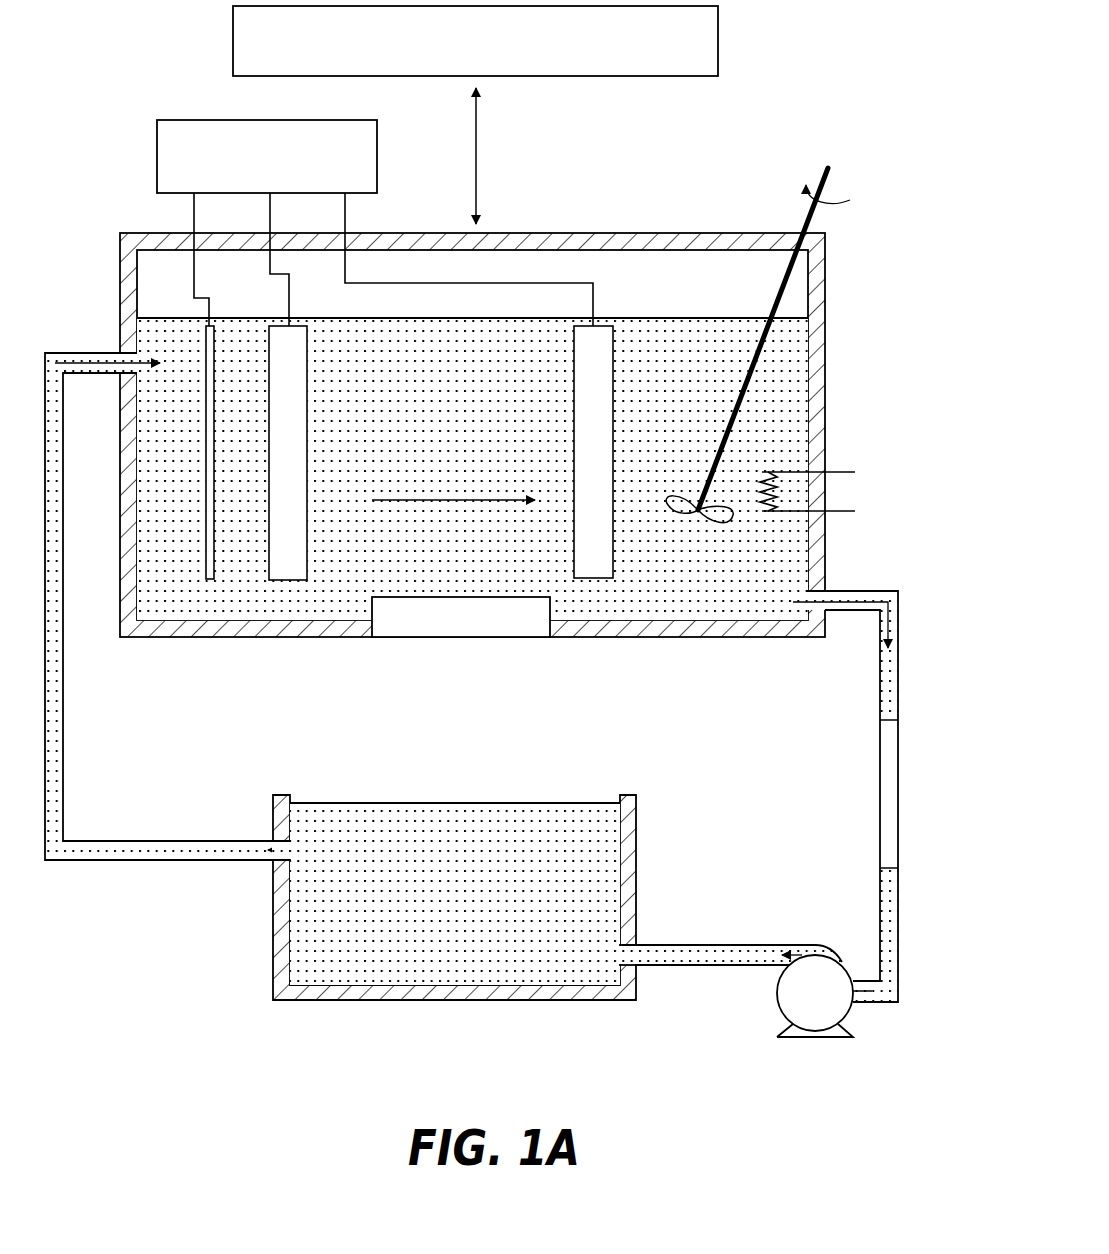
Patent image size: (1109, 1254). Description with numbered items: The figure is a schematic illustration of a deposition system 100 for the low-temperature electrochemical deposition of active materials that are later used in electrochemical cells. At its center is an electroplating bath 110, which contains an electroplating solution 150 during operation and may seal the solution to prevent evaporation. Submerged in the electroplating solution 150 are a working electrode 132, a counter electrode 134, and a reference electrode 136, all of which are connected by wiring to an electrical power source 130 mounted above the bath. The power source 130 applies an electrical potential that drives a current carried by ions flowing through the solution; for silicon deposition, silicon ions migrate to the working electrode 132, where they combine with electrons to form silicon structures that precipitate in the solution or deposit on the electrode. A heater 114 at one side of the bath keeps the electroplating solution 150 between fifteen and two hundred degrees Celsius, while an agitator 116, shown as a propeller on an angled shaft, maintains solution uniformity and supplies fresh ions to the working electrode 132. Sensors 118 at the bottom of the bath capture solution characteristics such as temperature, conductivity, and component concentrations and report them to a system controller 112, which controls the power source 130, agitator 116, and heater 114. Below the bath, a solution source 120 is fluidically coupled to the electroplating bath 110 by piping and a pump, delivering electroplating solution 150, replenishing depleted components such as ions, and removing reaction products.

The deposition system 100 is at (814, 96).
The electroplating bath 110 is at (826, 277).
The system controller 112 is at (475, 41).
The heater 114 is at (778, 487).
The agitator 116 is at (832, 182).
The sensors 118 is at (461, 617).
The solution source 120 is at (637, 838).
The electrical power source 130 is at (267, 156).
The working electrode 132 is at (598, 580).
The counter electrode 134 is at (288, 582).
The reference electrode 136 is at (210, 581).
The electroplating solution 150 is at (785, 372).